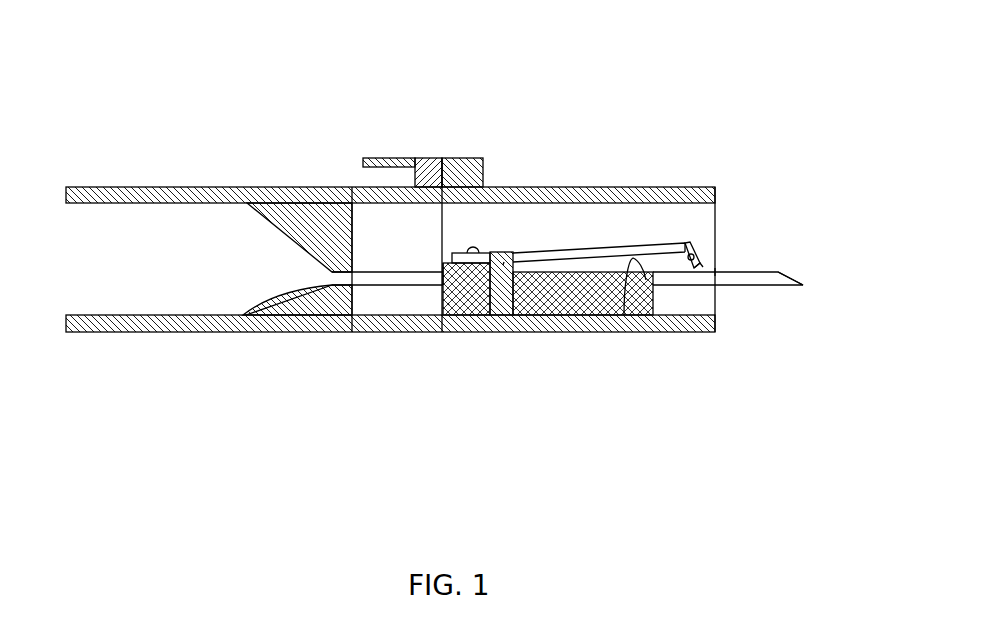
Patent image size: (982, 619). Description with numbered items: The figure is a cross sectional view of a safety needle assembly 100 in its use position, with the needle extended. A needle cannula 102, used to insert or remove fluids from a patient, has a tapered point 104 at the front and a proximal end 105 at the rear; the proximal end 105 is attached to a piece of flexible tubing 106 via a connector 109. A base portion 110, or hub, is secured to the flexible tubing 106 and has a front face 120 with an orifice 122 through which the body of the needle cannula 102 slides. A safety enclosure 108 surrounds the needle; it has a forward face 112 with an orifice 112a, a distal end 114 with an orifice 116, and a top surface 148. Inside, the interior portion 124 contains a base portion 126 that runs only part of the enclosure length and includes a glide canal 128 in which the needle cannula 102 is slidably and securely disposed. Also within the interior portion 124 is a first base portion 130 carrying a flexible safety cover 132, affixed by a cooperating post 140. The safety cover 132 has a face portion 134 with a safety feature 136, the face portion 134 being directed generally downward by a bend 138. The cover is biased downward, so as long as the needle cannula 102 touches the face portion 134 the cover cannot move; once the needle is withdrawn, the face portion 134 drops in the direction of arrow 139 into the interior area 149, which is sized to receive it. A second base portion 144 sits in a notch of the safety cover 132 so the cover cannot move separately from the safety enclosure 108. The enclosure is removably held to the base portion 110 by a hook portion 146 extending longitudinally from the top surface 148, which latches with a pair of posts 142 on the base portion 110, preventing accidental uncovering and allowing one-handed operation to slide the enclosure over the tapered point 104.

The safety needle assembly 100 is at (722, 35).
The needle cannula 102 is at (774, 287).
The tapered point 104 is at (792, 273).
The proximal end 105 is at (290, 301).
The flexible tubing 106 is at (128, 332).
The safety enclosure 108 is at (603, 180).
The connector 109 is at (351, 302).
The base portion 110 is at (364, 178).
The forward face 112 is at (716, 322).
The orifice 112a is at (718, 272).
The distal end 114 is at (444, 212).
The orifice 116 is at (442, 275).
The front face 120 is at (448, 303).
The orifice 122 is at (443, 300).
The interior portion 124 is at (573, 229).
The base portion 126 is at (548, 305).
The glide canal 128 is at (624, 315).
The first base portion 130 is at (480, 270).
The flexible safety cover 132 is at (625, 247).
The face portion 134 is at (696, 255).
The safety feature 136 is at (701, 262).
The bend 138 is at (694, 246).
The arrow 139 is at (669, 284).
The post 140 is at (477, 246).
The posts 142 is at (430, 158).
The second base portion 144 is at (504, 262).
The hook portion 146 is at (390, 158).
The top surface 148 is at (460, 158).
The interior area 149 is at (711, 313).